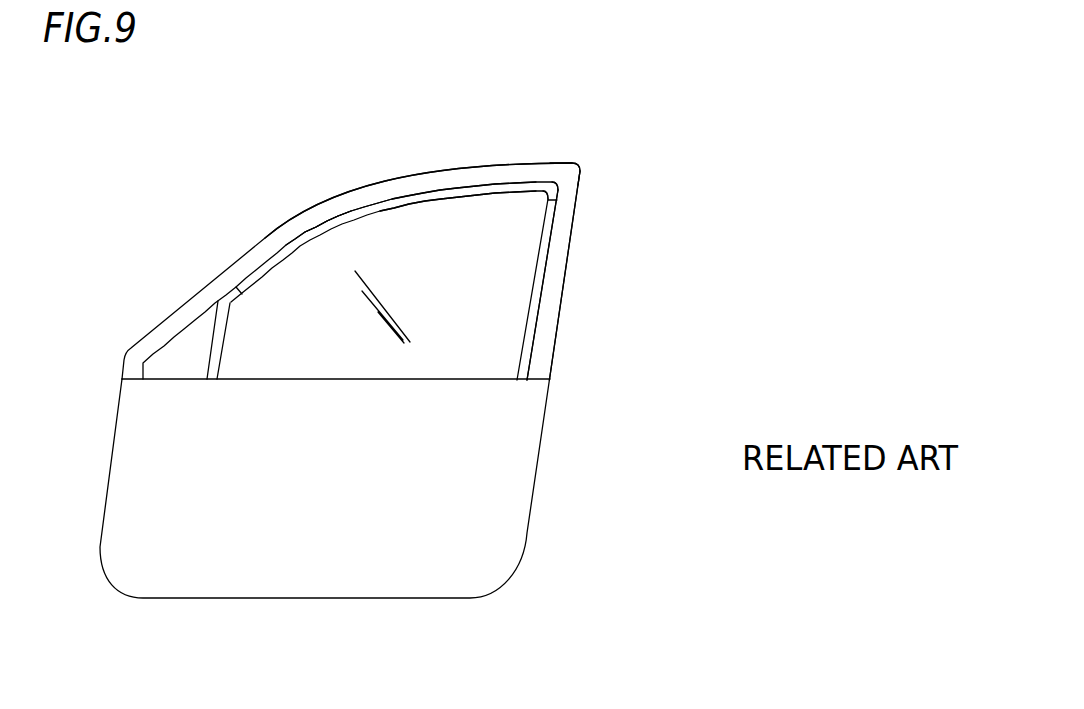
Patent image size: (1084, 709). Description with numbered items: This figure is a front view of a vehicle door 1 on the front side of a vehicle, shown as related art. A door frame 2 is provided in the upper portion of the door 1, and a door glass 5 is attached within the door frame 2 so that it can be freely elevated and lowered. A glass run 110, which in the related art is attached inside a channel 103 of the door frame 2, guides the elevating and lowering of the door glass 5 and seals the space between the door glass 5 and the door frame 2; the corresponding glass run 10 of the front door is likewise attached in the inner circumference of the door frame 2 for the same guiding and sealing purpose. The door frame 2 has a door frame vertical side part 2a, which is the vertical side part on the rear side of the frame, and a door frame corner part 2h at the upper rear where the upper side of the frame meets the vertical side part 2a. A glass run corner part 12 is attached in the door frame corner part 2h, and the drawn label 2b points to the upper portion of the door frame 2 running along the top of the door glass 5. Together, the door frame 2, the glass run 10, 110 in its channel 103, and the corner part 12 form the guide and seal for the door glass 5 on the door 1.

The door 1 is at (507, 493).
The door frame 2 is at (253, 253).
The door frame vertical side part 2a is at (555, 273).
The upper sash portion (roof side portion) 2b is at (513, 173).
The door frame corner part 2h is at (570, 178).
The door glass 5 is at (482, 320).
The glass run 10 is at (452, 161).
The glass run 110 is at (383, 168).
The channel 103 is at (335, 210).
The glass run corner part 12 is at (218, 305).